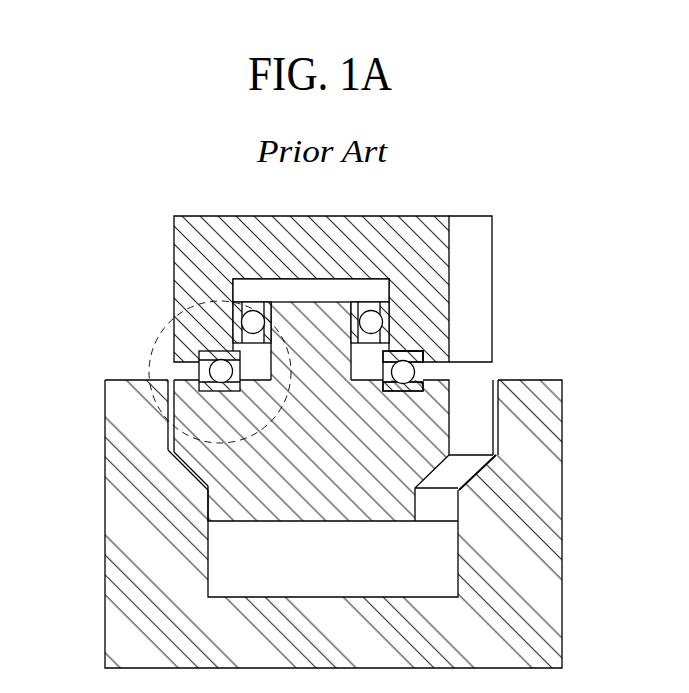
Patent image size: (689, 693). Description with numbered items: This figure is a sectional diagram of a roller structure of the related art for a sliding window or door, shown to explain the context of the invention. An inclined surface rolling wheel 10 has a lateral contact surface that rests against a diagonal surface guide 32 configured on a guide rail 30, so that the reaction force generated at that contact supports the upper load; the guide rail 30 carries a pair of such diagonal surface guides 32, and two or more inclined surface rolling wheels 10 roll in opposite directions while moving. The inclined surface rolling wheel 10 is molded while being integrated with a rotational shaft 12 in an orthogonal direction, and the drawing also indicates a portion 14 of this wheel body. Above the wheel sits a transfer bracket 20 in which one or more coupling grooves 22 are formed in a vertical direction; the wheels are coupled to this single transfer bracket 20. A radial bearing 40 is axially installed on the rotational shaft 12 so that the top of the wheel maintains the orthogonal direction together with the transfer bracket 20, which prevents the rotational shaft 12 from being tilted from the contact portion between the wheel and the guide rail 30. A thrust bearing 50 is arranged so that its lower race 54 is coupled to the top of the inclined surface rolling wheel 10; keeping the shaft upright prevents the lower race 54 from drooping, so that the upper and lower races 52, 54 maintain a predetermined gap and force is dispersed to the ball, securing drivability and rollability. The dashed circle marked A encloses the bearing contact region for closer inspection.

The inclined surface rolling wheel 10 is at (235, 477).
The rotational shaft 12 is at (310, 319).
The lower portion of rotating body 14 is at (190, 465).
The transfer bracket 20 is at (174, 222).
The coupling groove 22 is at (255, 288).
The guide rail 30 is at (105, 613).
The diagonal surface guide 32 is at (172, 437).
The radial bearing 40 is at (420, 311).
The thrust bearing 50 is at (440, 371).
The upper race 52 is at (388, 357).
The lower race 54 is at (417, 384).
The detail region A is at (158, 337).